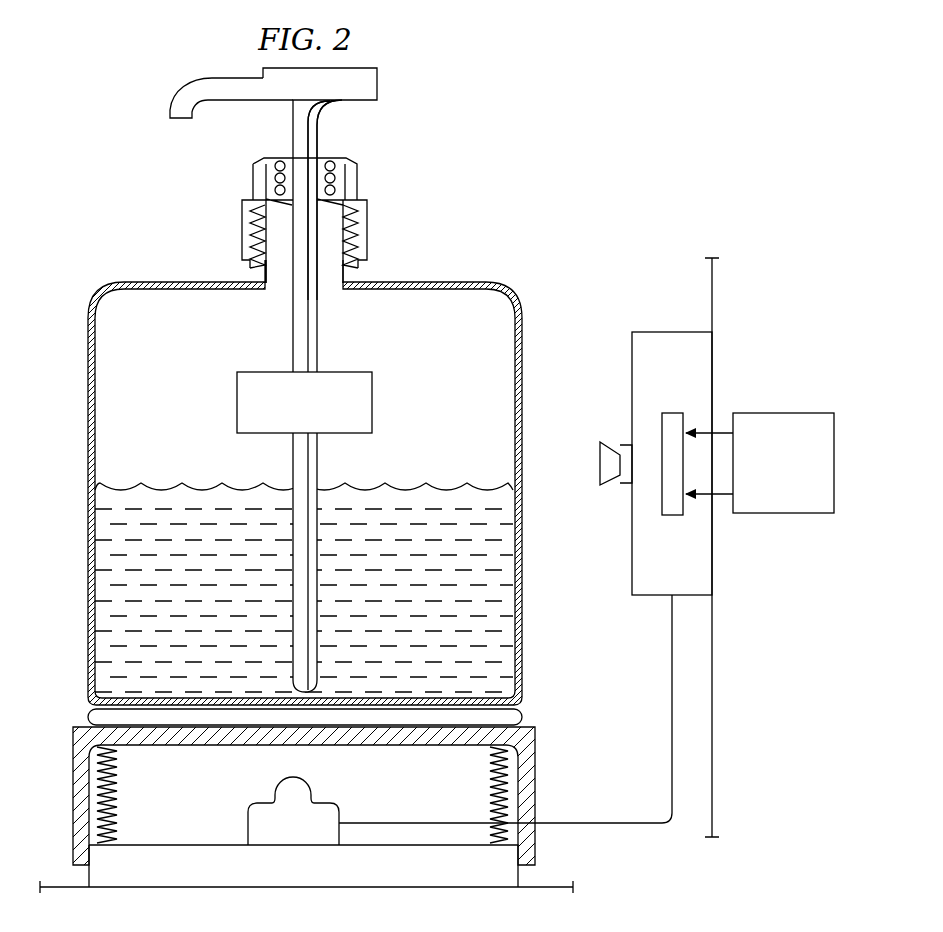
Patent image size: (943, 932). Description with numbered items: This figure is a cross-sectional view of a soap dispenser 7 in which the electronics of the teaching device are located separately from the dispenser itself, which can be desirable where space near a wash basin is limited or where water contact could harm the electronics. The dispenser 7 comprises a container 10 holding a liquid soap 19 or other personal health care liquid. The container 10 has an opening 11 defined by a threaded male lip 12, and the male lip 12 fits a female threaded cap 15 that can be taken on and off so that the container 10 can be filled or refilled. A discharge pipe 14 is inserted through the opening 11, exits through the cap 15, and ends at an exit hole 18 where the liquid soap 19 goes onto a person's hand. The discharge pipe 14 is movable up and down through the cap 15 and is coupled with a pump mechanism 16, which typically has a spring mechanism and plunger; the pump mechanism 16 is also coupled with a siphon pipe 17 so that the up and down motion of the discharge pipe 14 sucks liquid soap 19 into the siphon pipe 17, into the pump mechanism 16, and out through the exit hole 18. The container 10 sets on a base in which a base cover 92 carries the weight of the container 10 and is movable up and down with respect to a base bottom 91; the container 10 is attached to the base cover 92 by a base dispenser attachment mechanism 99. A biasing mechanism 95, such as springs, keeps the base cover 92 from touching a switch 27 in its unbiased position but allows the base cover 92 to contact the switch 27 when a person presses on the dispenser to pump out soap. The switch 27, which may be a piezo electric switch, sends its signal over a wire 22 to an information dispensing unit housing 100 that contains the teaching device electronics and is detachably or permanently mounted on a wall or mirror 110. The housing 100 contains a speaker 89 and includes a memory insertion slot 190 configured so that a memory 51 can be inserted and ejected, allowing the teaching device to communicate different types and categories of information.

The dispenser 7 is at (656, 133).
The container 10 is at (86, 399).
The opening 11 is at (278, 285).
The threaded male lip 12 is at (337, 257).
The discharge pipe 14 is at (318, 133).
The cap 15 is at (368, 233).
The pump mechanism 16 is at (237, 403).
The siphon pipe 17 is at (293, 455).
The exit hole 18 is at (178, 120).
The liquid soap 19 is at (447, 492).
The wire 22 is at (395, 823).
The switch 27 is at (262, 805).
The memory 51 is at (795, 495).
The speaker 89 is at (600, 458).
The base bottom 91 is at (318, 882).
The base cover 92 is at (73, 766).
The biasing mechanism 95 is at (117, 778).
The base dispenser attachment mechanism 99 is at (88, 716).
The information dispensing unit housing 100 is at (630, 390).
The wall or mirror 110 is at (761, 337).
The memory insertion slot 190 is at (675, 412).